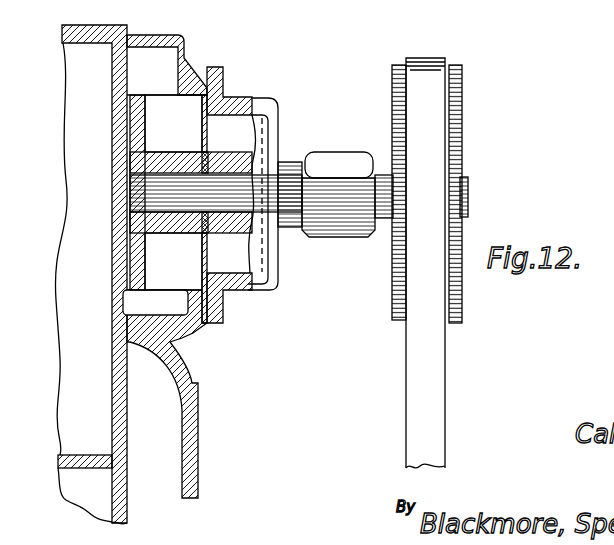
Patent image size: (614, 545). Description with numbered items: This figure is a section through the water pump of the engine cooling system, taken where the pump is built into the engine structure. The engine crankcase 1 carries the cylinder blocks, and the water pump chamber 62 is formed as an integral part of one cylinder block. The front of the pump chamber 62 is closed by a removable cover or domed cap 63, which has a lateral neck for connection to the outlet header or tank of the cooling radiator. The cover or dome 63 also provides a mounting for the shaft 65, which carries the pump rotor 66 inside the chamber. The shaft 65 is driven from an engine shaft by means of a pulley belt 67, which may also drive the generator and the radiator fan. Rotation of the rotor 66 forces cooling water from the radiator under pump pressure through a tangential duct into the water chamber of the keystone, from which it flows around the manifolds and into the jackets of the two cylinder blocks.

The engine crankcase 1 is at (108, 500).
The water pump chamber 62 is at (163, 72).
The removable cover or domed cap 63 is at (257, 105).
The shaft 65 is at (228, 197).
The pump rotor 66 is at (223, 76).
The pulley belt 67 is at (432, 380).